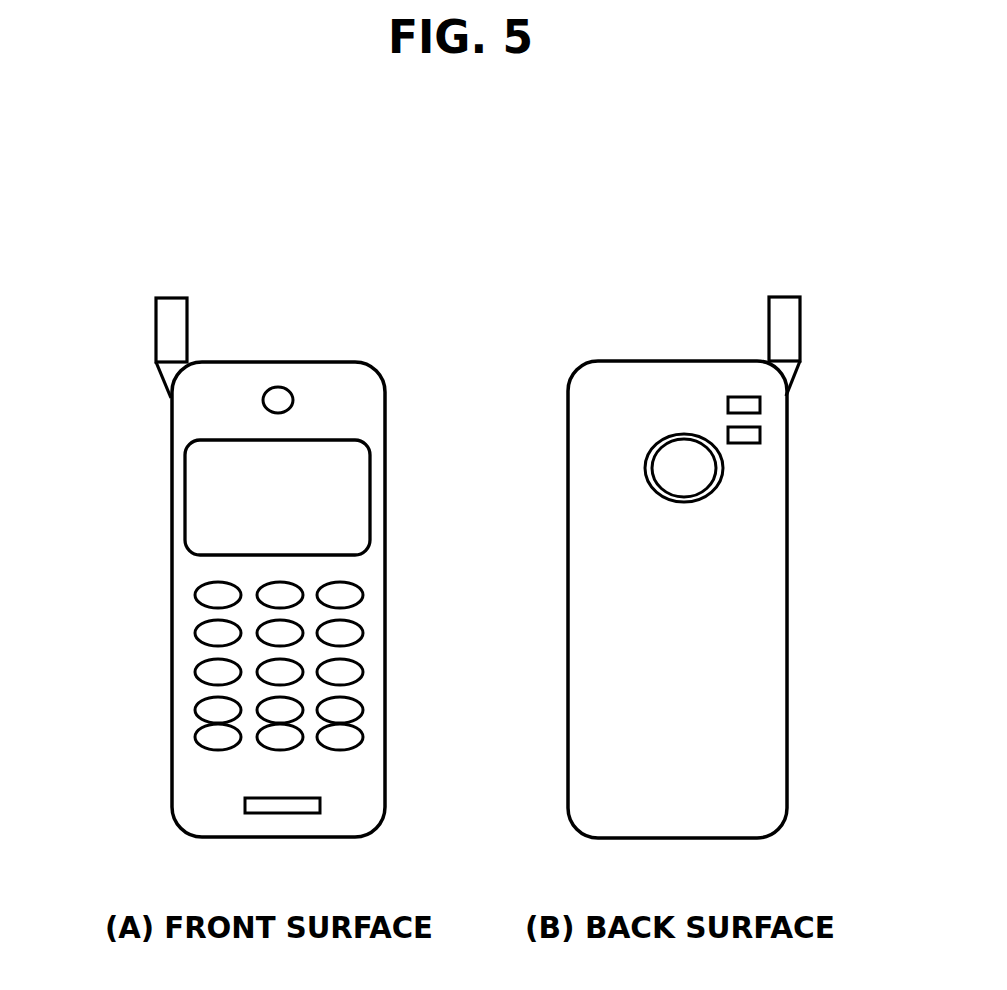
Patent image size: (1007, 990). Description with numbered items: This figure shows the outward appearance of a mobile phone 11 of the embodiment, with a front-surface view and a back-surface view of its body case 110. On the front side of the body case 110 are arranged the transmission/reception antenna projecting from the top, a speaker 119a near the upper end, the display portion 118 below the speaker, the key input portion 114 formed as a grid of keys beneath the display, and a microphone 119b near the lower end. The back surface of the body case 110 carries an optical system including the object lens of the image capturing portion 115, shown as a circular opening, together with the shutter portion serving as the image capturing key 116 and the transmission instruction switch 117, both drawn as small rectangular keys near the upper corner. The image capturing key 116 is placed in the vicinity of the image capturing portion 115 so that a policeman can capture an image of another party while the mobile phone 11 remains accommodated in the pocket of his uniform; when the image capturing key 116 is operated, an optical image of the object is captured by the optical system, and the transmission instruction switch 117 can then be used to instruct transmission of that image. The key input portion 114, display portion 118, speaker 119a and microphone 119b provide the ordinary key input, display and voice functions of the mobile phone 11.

The mobile phone 11 is at (509, 179).
The body case 110 is at (385, 410).
The key input portion 114 is at (155, 578).
The image capturing portion 115 is at (723, 468).
The image capturing key 116 is at (760, 434).
The transmission instruction switch 117 is at (760, 404).
The display portion 118 is at (358, 497).
The speaker 119a is at (279, 387).
The microphone 119b is at (320, 806).